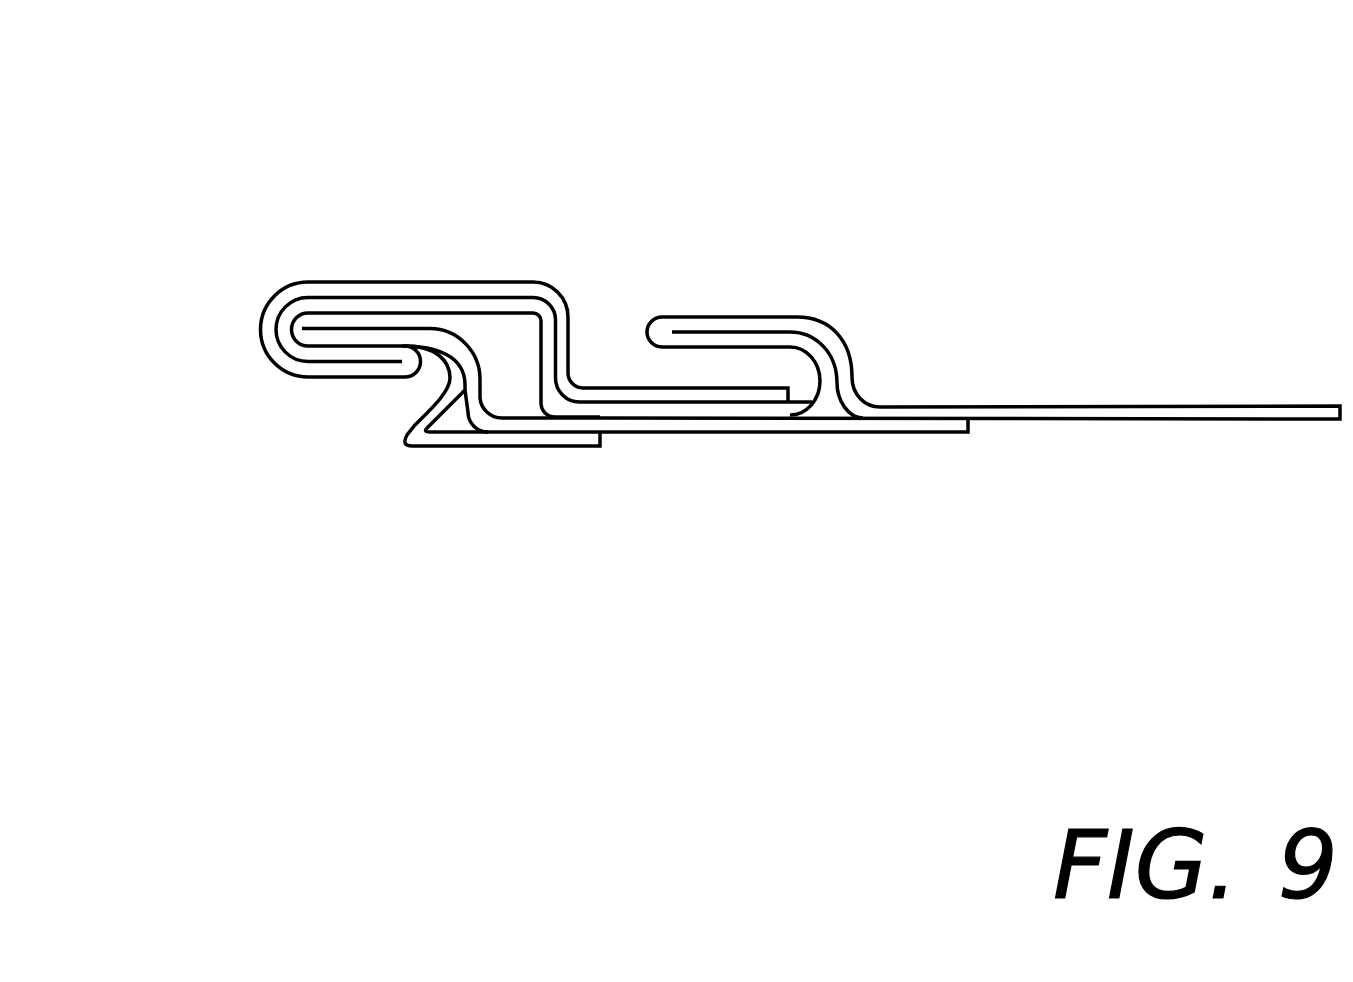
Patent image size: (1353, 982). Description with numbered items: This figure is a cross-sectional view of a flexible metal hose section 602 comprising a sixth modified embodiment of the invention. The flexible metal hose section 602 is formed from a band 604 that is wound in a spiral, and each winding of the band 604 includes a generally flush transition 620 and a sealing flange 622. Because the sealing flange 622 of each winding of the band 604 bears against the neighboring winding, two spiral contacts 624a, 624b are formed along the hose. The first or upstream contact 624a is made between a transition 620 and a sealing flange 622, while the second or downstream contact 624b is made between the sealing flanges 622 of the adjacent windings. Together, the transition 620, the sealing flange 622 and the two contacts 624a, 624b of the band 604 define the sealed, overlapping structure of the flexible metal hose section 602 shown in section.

The flexible metal hose section 602 is at (1035, 162).
The band 604 is at (290, 284).
The transition 620 is at (637, 420).
The sealing flange 622 is at (1283, 508).
The first or upstream contact 624a is at (905, 493).
The second or downstream contact 624b is at (1127, 302).